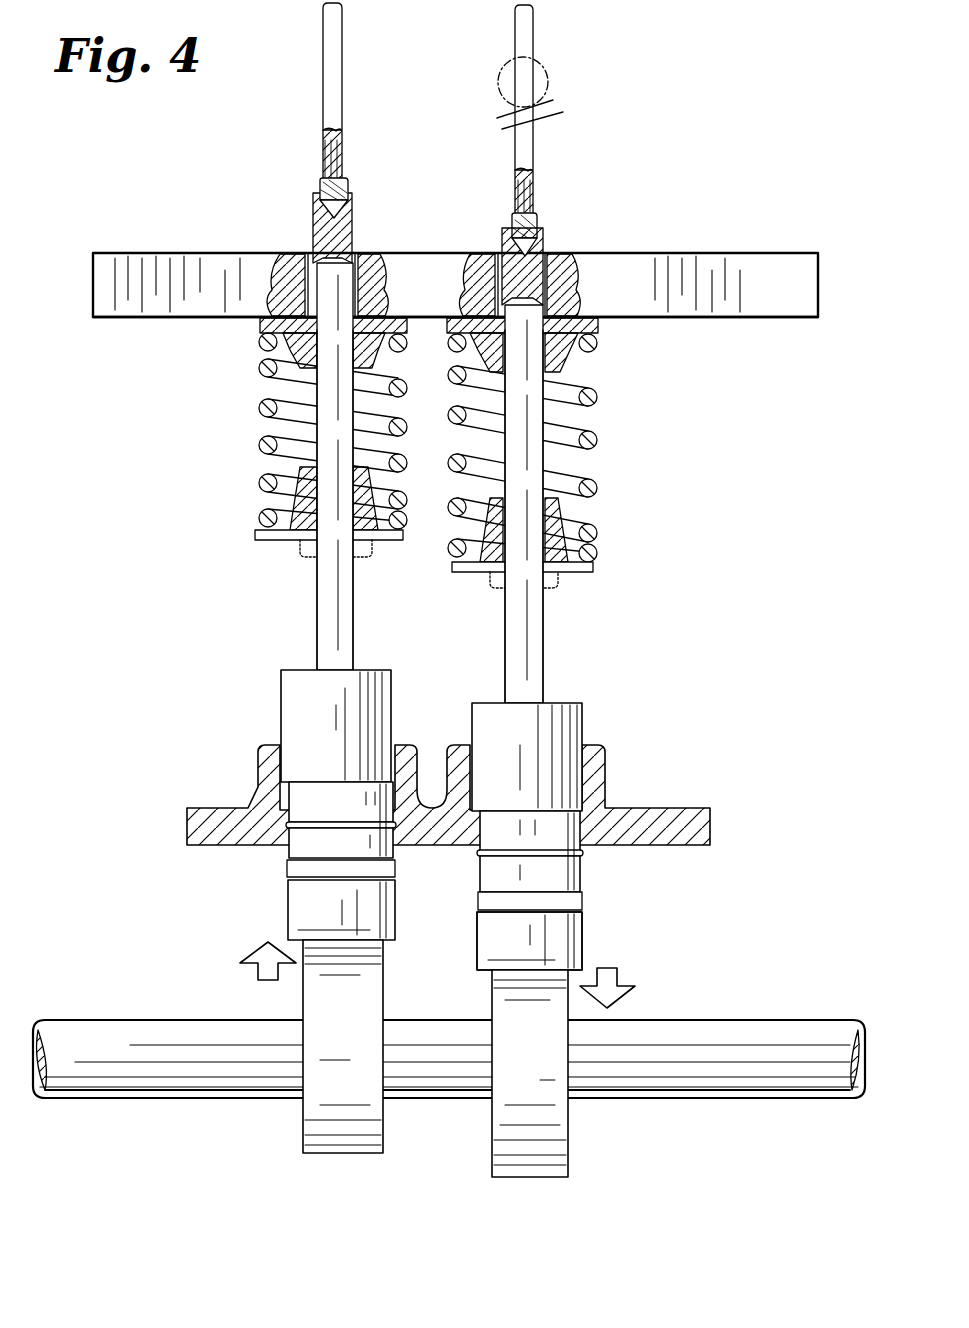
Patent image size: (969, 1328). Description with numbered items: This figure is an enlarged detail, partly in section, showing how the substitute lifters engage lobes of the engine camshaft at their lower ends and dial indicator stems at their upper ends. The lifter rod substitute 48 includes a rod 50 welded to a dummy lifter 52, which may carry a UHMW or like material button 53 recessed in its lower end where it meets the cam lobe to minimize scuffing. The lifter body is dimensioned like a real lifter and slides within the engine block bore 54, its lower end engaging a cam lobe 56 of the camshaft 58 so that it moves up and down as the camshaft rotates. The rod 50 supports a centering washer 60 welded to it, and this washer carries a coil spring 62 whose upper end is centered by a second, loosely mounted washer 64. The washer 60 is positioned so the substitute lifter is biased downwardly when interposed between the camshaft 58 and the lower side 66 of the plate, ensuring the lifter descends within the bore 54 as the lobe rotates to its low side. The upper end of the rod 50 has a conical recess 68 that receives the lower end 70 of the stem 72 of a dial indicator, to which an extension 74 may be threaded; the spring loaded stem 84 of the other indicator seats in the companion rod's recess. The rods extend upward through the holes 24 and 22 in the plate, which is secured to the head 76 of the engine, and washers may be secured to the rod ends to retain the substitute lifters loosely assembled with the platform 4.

The platform 4 is at (632, 252).
The hole in plate 22 is at (352, 250).
The hole in plate 24 is at (545, 253).
The lifter rod substitute 48 is at (566, 682).
The rod 50 is at (537, 628).
The dummy lifter 52 is at (583, 731).
The button 53 is at (515, 960).
The engine block bore 54 is at (582, 838).
The cam lobe 56 is at (553, 1147).
The camshaft 58 is at (683, 1020).
The centering washer 60 is at (573, 523).
The coil spring 62 is at (598, 447).
The second washer 64 is at (596, 330).
The lower side of plate 66 is at (735, 318).
The conical recess 68 is at (510, 244).
The lower end of stem 70 is at (532, 232).
The stem 72 is at (533, 51).
The extension 74 is at (536, 148).
The head of the engine 76 is at (674, 803).
The spring loaded stem 84 is at (332, 100).